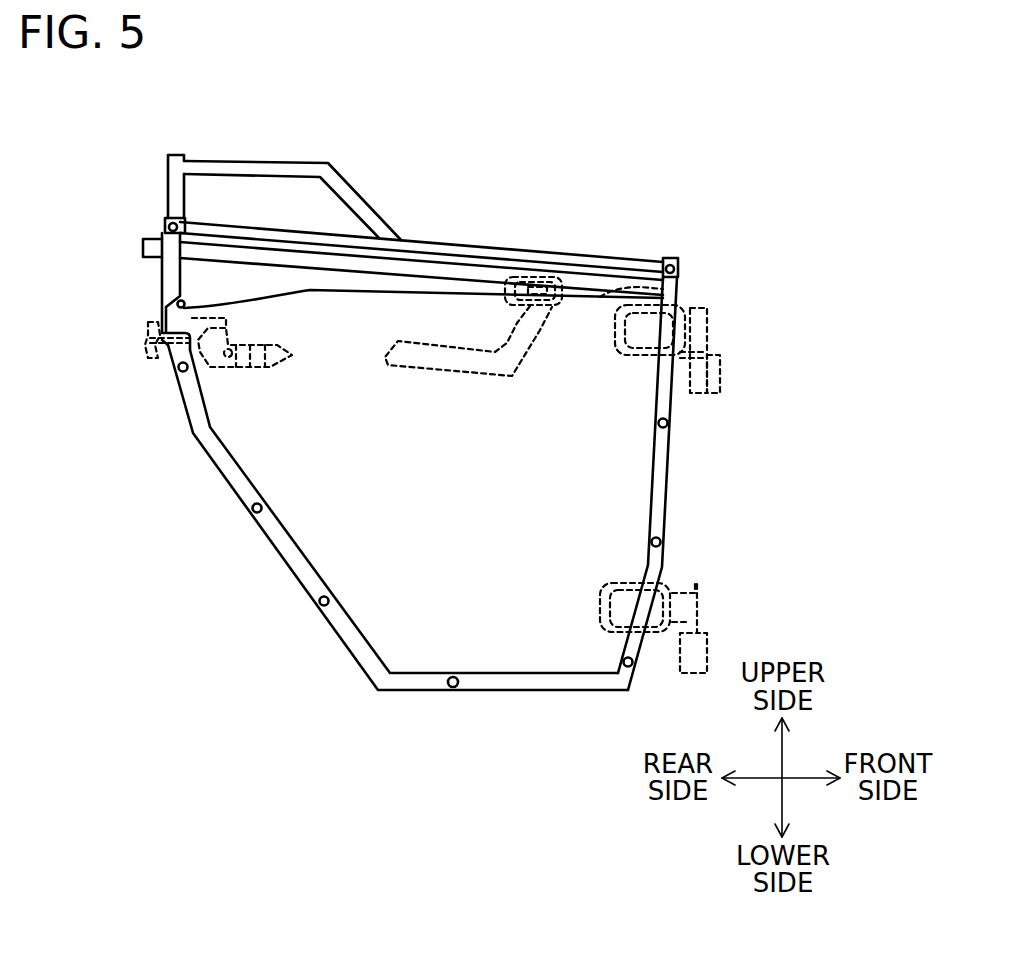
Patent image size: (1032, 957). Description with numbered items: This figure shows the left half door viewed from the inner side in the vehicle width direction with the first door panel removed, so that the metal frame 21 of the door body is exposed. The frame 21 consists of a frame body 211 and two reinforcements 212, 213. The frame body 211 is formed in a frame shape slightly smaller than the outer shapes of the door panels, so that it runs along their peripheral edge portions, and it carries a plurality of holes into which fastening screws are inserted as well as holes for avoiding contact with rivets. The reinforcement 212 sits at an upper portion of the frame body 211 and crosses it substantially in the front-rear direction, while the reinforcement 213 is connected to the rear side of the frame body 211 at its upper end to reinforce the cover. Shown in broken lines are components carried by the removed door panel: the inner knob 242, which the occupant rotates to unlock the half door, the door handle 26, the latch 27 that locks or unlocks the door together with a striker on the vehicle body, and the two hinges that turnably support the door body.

The reinforcement 213 is at (258, 167).
The frame 21 is at (452, 243).
The reinforcement 212 is at (143, 249).
The latch 27 is at (145, 327).
The door handle 26 is at (448, 357).
The frame body 211 is at (289, 553).
The inner knob 242 is at (678, 291).